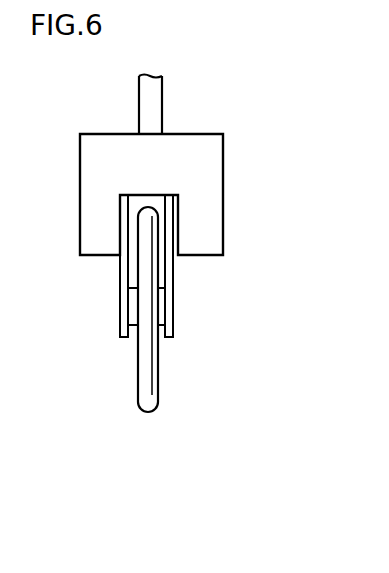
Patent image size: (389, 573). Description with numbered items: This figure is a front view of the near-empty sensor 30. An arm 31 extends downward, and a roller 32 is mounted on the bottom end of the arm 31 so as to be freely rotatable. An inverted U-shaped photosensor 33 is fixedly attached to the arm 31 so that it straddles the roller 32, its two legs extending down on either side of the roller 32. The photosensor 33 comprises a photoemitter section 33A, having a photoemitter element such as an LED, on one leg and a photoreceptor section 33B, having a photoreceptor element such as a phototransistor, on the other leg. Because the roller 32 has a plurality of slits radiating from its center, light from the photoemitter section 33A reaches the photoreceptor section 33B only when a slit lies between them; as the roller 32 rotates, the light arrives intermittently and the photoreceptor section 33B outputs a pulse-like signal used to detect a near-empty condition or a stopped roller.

The near-empty sensor 30 is at (108, 395).
The arm 31 is at (163, 102).
The roller 32 is at (156, 388).
The photosensor 33 is at (226, 197).
The photoemitter section 33A is at (80, 225).
The photoreceptor section 33B is at (223, 245).